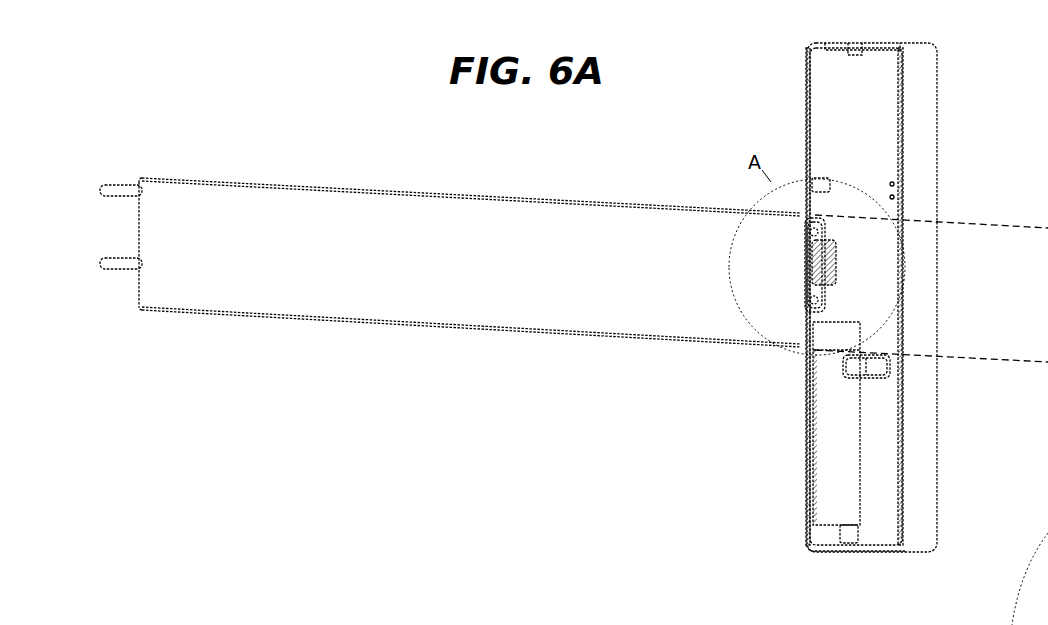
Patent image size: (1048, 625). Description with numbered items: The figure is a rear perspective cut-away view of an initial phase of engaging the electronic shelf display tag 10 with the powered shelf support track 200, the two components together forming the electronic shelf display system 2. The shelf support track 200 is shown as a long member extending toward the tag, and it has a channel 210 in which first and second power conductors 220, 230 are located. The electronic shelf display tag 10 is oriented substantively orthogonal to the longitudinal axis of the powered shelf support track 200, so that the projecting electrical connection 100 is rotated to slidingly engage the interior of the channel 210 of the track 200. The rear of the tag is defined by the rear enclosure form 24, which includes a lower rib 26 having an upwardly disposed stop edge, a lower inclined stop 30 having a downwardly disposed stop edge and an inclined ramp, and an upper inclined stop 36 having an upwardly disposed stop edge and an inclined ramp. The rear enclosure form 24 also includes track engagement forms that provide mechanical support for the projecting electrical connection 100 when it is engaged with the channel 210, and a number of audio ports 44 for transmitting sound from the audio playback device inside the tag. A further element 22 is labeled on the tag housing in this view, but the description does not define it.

The electronic shelf display system 2 is at (294, 118).
The electronic shelf display tag 10 is at (943, 95).
The housing wall 22 is at (925, 136).
The rear enclosure form 24 is at (818, 88).
The lower rib 26 is at (868, 372).
The lower inclined stop 30 is at (848, 532).
The upper inclined stop 36 is at (820, 184).
The audio ports 44 is at (892, 186).
The projecting electrical connection 100 is at (848, 248).
The powered shelf support track 200 is at (593, 270).
The channel 210 is at (1047, 608).
The first power conductor 220 is at (121, 192).
The second power conductor 230 is at (118, 262).